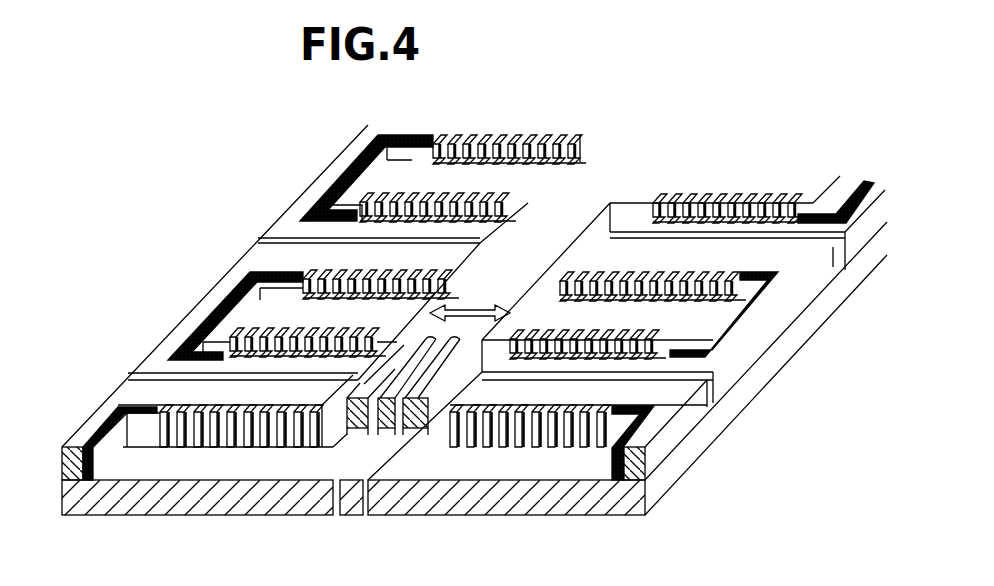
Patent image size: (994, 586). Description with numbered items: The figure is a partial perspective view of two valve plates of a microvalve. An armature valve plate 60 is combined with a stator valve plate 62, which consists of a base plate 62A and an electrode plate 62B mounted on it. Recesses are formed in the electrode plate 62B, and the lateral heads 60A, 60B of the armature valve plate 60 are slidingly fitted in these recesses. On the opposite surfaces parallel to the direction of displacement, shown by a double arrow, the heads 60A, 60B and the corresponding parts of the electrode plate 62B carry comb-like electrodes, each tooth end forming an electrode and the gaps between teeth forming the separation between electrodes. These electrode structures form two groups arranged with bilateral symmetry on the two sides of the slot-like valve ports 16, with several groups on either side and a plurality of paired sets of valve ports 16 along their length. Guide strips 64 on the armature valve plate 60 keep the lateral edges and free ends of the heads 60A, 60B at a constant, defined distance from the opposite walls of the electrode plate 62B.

The valve ports 16 is at (557, 210).
The armature valve plate 60 is at (252, 272).
The lateral head 60A is at (217, 302).
The lateral head 60B is at (700, 306).
The stator valve plate 62 is at (148, 500).
The base plate 62A is at (148, 397).
The electrode plate 62B is at (177, 363).
The guide strips 64 is at (325, 200).